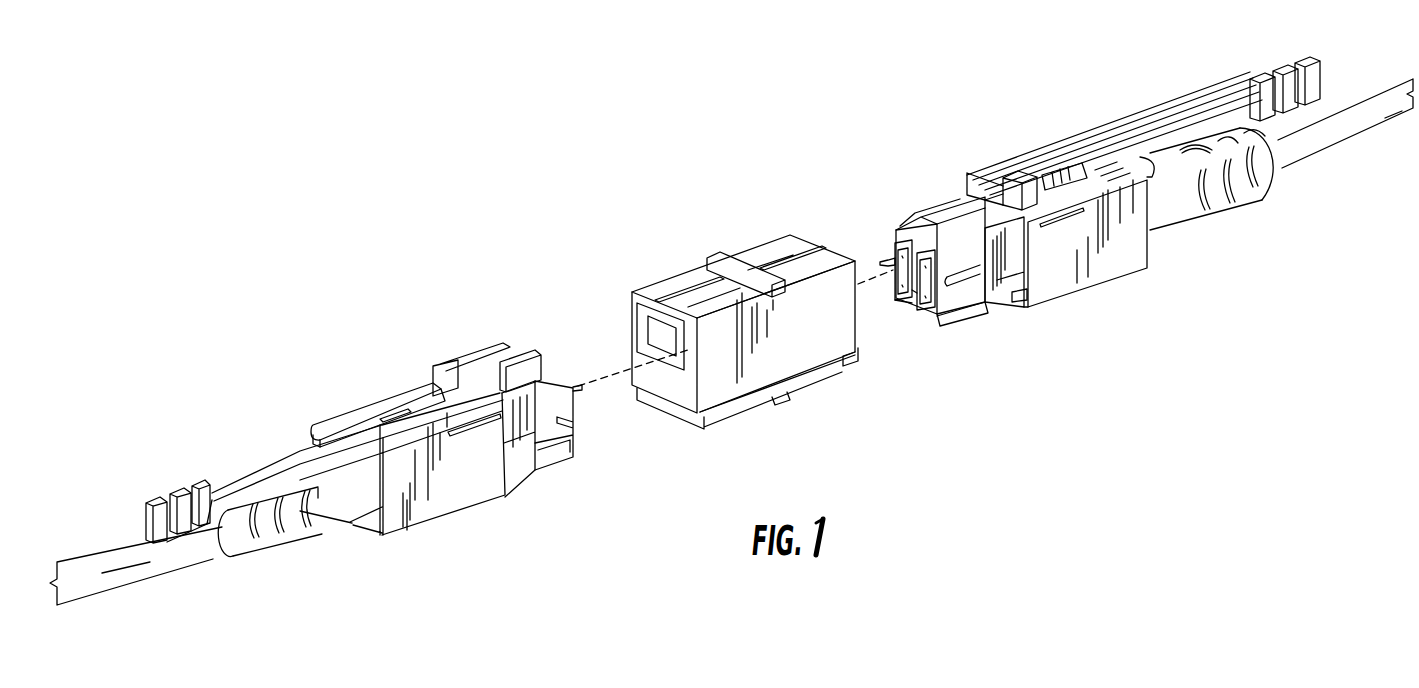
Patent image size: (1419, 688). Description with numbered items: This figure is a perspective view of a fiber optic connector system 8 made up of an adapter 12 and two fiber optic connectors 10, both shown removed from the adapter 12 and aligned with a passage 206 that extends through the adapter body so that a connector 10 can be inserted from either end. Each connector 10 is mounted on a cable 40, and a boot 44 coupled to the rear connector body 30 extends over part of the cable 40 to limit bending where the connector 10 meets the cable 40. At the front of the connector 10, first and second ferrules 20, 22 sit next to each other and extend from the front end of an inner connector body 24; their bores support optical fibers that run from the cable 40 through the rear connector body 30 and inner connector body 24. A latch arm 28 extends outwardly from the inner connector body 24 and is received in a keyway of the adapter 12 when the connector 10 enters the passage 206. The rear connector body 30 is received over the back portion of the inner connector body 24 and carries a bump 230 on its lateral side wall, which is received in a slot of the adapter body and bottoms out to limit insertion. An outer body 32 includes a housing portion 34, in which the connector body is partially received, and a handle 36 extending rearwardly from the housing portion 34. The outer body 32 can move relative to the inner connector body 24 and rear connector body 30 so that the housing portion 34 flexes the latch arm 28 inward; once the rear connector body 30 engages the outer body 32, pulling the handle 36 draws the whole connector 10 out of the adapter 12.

The fiber optic connector system 8 is at (557, 244).
The fiber optic connector 10 is at (340, 393).
The adapter 12 is at (716, 313).
The passage 206 is at (660, 344).
The first ferrule 20 is at (891, 258).
The second ferrule 22 is at (935, 312).
The inner connector body 24 is at (970, 318).
The latch arm 28 is at (950, 204).
The rear connector body 30 is at (1003, 306).
The bump 230 is at (1020, 302).
The outer body 32 is at (1053, 271).
The housing portion 34 is at (1133, 263).
The handle 36 is at (1165, 100).
The cable 40 is at (1305, 158).
The boot 44 is at (1175, 228).